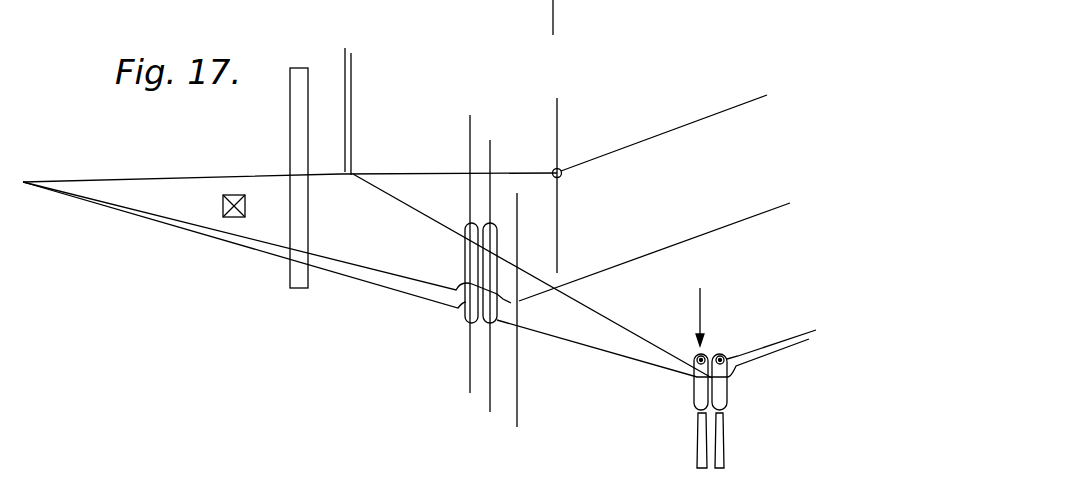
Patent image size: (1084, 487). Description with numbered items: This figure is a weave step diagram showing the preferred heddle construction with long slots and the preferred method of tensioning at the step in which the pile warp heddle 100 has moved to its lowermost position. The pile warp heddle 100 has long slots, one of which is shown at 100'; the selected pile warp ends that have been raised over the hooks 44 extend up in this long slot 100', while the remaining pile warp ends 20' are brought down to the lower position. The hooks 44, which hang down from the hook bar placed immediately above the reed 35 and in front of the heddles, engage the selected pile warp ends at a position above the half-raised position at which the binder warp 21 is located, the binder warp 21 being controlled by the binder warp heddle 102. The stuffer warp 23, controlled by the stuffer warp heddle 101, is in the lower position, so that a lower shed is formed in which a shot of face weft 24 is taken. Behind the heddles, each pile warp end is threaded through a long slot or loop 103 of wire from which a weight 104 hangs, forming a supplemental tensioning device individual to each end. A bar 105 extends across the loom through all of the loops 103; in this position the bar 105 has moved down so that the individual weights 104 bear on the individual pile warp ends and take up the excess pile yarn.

The reed 35 is at (290, 110).
The hooks 44 is at (353, 169).
The face weft 24 is at (223, 203).
The binder warp 21 is at (428, 173).
The stuffer warp 23 is at (373, 260).
The pile warp ends 20' is at (375, 279).
The pile warp heddle 100 is at (487, 253).
The long slot 100' is at (446, 273).
The stuffer warp heddle 101 is at (517, 363).
The binder warp heddle 102 is at (558, 142).
The long slot or loop 103 is at (694, 384).
The weight 104 is at (698, 450).
The bar 105 is at (696, 358).